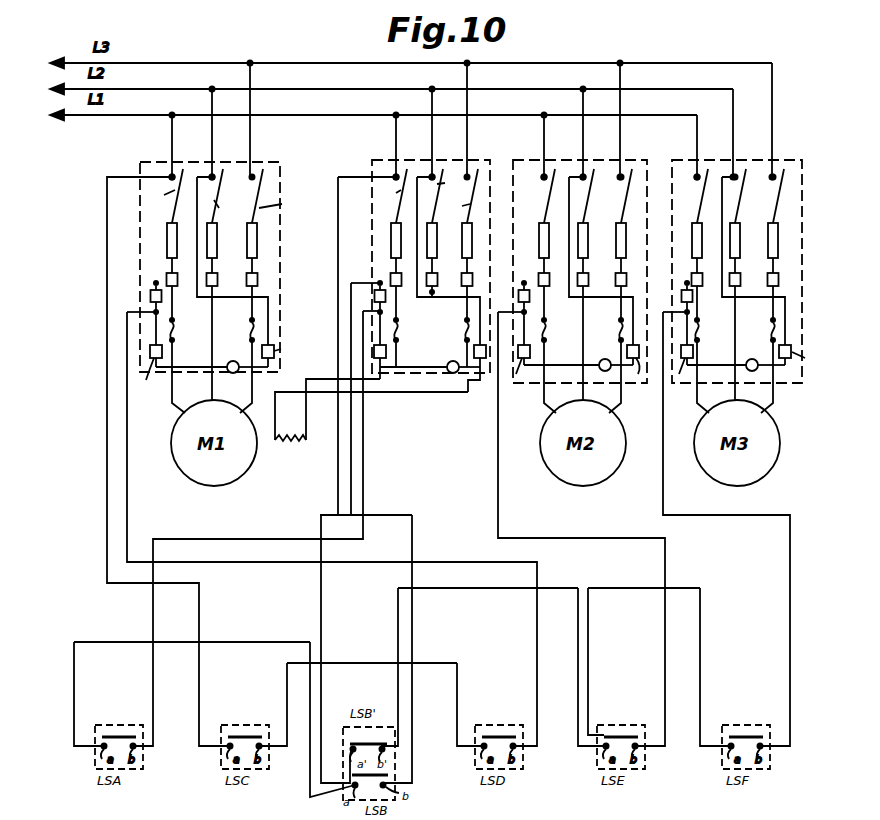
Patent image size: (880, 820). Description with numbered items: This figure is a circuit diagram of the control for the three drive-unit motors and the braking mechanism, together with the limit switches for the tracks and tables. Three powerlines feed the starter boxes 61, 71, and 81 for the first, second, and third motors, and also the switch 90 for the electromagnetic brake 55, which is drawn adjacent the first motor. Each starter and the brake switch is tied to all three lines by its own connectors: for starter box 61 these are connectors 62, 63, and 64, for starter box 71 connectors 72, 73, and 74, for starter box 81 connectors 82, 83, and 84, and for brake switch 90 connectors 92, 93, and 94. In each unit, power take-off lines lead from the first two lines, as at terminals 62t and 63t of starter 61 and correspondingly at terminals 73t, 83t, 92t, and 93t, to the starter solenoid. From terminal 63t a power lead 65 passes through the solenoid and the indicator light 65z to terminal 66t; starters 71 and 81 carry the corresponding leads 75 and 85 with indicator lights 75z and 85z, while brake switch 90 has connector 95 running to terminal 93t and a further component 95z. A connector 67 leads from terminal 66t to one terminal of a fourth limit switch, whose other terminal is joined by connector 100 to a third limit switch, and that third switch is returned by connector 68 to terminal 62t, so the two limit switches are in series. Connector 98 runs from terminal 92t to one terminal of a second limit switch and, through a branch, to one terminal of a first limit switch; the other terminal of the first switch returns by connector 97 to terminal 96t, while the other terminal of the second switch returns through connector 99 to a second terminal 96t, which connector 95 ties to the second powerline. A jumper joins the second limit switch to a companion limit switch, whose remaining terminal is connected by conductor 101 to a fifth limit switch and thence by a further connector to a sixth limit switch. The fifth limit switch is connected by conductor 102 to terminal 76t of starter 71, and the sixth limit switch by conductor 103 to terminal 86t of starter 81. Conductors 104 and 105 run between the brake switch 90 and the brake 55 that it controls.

The electromagnetic brake element 55 is at (298, 437).
The starter box 61 is at (300, 152).
The connector 62 is at (173, 139).
The terminal 62t is at (168, 174).
The connector 63 is at (213, 107).
The terminal 63t is at (214, 174).
The connector 64 is at (252, 104).
The power lead 65 is at (196, 298).
The indicator light 65z is at (234, 360).
The terminal 66t is at (154, 311).
The connector 67 is at (128, 497).
The connector 68 is at (107, 493).
The starter box 71 is at (650, 163).
The line conductor 72 is at (545, 139).
The line conductor 73 is at (584, 139).
The terminal 73t is at (581, 176).
The line conductor 74 is at (621, 107).
The control conductor 75 is at (578, 297).
The contactor coil 75z is at (608, 348).
The terminal 76t is at (525, 290).
The starter switch 81 is at (804, 161).
The line conductor 82 is at (699, 138).
The line conductor 83 is at (735, 136).
The terminal 83t is at (731, 176).
The line conductor 84 is at (774, 98).
The control conductor 85 is at (729, 297).
The contactor coil 85z is at (754, 359).
The terminal 86t is at (685, 310).
The brake switch 90 is at (483, 162).
The line conductor 92 is at (397, 133).
The terminal 92t is at (394, 174).
The line conductor 93 is at (433, 139).
The terminal 93t is at (430, 174).
The line conductor 94 is at (468, 133).
The connector 95 is at (434, 298).
The brake contactor coil 95z is at (456, 350).
The terminal 96t is at (378, 281).
The connector 97 is at (365, 495).
The connector 98 is at (338, 496).
The connector 99 is at (413, 531).
The connector 100 is at (421, 664).
The conductor 101 is at (467, 590).
The conductor 102 is at (665, 654).
The conductor 103 is at (790, 645).
The brake conductor 104 is at (330, 379).
The brake conductor 105 is at (296, 393).